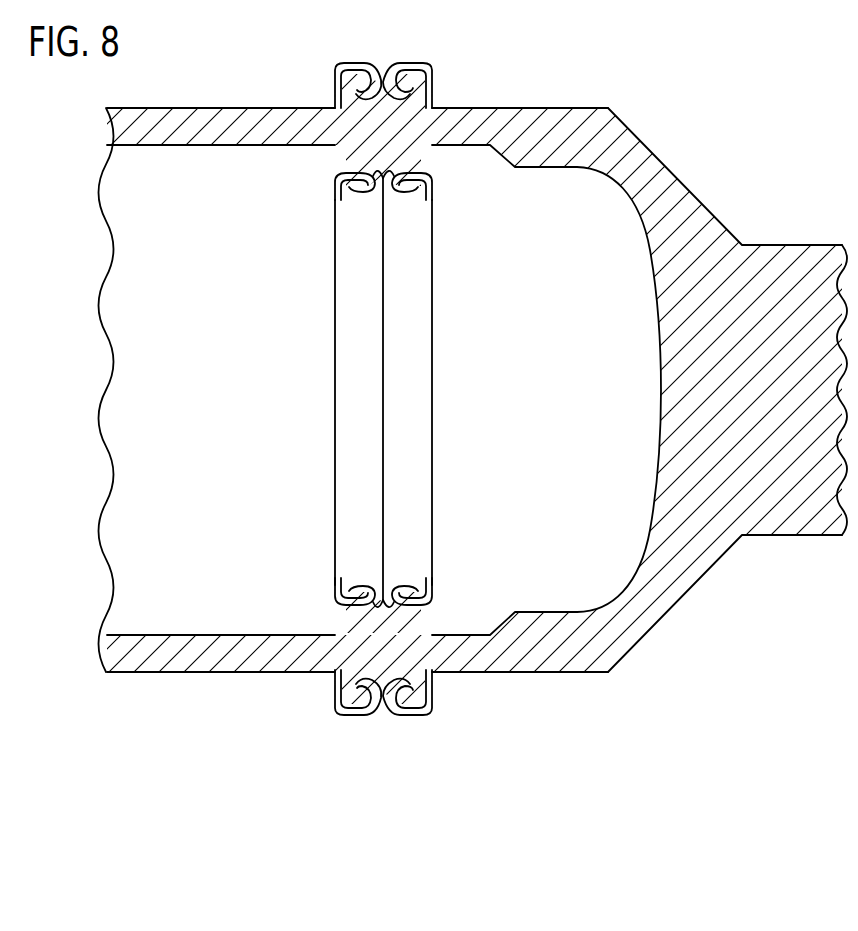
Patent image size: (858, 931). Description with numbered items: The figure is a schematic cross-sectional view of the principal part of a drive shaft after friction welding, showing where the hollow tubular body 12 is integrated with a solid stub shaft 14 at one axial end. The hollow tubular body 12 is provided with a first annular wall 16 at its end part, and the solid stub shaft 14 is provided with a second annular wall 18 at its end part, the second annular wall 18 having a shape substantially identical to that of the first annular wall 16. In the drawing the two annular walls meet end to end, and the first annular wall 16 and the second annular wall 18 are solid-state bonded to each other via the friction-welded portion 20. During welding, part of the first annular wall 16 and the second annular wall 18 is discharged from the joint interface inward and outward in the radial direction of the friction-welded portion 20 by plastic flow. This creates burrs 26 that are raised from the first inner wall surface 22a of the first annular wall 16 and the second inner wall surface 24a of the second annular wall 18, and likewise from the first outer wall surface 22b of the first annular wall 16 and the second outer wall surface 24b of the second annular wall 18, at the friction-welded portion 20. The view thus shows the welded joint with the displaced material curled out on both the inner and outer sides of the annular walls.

The hollow tubular body 12 is at (151, 662).
The solid stub shaft 14 is at (792, 513).
The first annular wall 16 is at (365, 123).
The second annular wall 18 is at (400, 123).
The friction-welded portion 20 is at (376, 677).
The first inner wall surface 22a is at (313, 632).
The first outer wall surface 22b is at (283, 672).
The second inner wall surface 24a is at (453, 632).
The second outer wall surface 24b is at (452, 673).
The burrs 26 is at (368, 326).